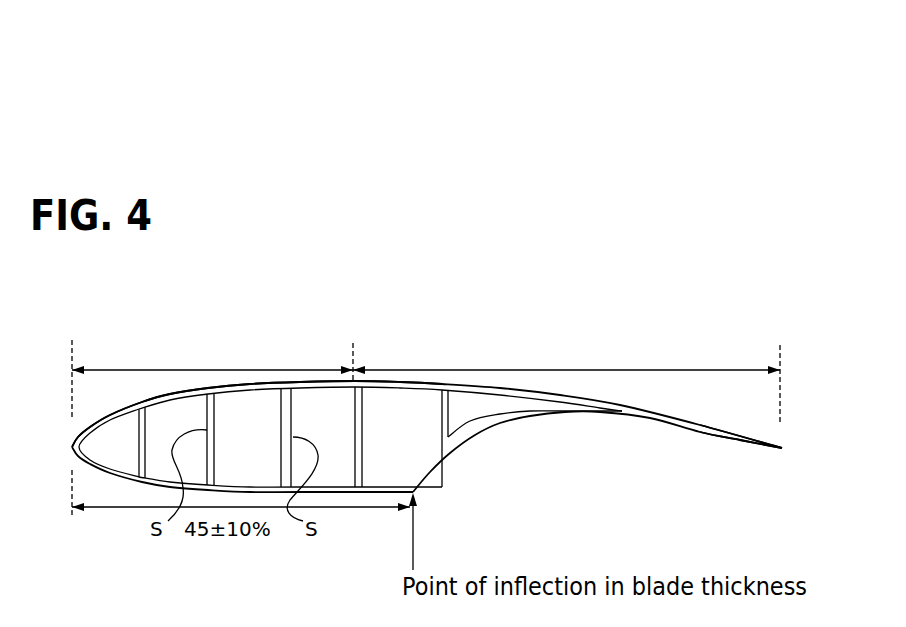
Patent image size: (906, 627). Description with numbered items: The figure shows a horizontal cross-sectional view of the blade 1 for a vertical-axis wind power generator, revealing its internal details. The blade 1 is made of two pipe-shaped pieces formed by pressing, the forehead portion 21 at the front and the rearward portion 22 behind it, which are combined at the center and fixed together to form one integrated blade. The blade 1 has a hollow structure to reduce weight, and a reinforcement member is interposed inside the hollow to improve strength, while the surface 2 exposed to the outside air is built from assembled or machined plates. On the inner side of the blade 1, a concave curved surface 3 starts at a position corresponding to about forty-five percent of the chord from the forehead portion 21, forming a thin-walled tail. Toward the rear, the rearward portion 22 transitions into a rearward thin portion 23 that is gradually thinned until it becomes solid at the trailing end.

The blade 1 is at (306, 332).
The surface 2 is at (400, 382).
The concave curved surface 3 is at (499, 445).
The forehead portion 21 is at (212, 427).
The rearward portion 22 is at (566, 382).
The rearward thin portion 23 is at (710, 427).